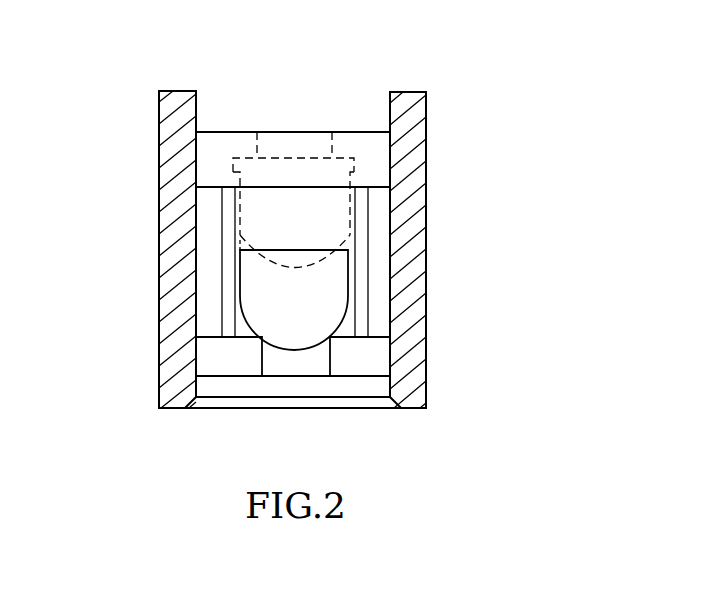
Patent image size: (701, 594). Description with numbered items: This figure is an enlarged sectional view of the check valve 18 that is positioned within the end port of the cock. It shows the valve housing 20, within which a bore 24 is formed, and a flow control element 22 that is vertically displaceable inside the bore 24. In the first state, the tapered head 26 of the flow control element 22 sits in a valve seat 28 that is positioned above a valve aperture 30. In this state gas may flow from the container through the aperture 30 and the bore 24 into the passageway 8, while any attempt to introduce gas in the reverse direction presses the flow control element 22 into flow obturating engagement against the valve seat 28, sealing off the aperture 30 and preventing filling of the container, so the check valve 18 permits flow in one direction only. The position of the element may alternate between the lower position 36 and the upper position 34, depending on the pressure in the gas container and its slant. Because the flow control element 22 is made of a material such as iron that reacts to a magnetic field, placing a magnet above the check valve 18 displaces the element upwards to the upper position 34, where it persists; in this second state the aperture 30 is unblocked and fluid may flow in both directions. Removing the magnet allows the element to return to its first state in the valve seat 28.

The passageway 8 is at (353, 103).
The check valve 18 is at (111, 128).
The valve housing 20 is at (173, 268).
The flow control element 22 is at (325, 287).
The bore 24 is at (360, 187).
The tapered head 26 is at (262, 358).
The valve seat 28 is at (330, 350).
The valve aperture 30 is at (283, 372).
The upper position 34 is at (322, 217).
The lower position 36 is at (240, 240).